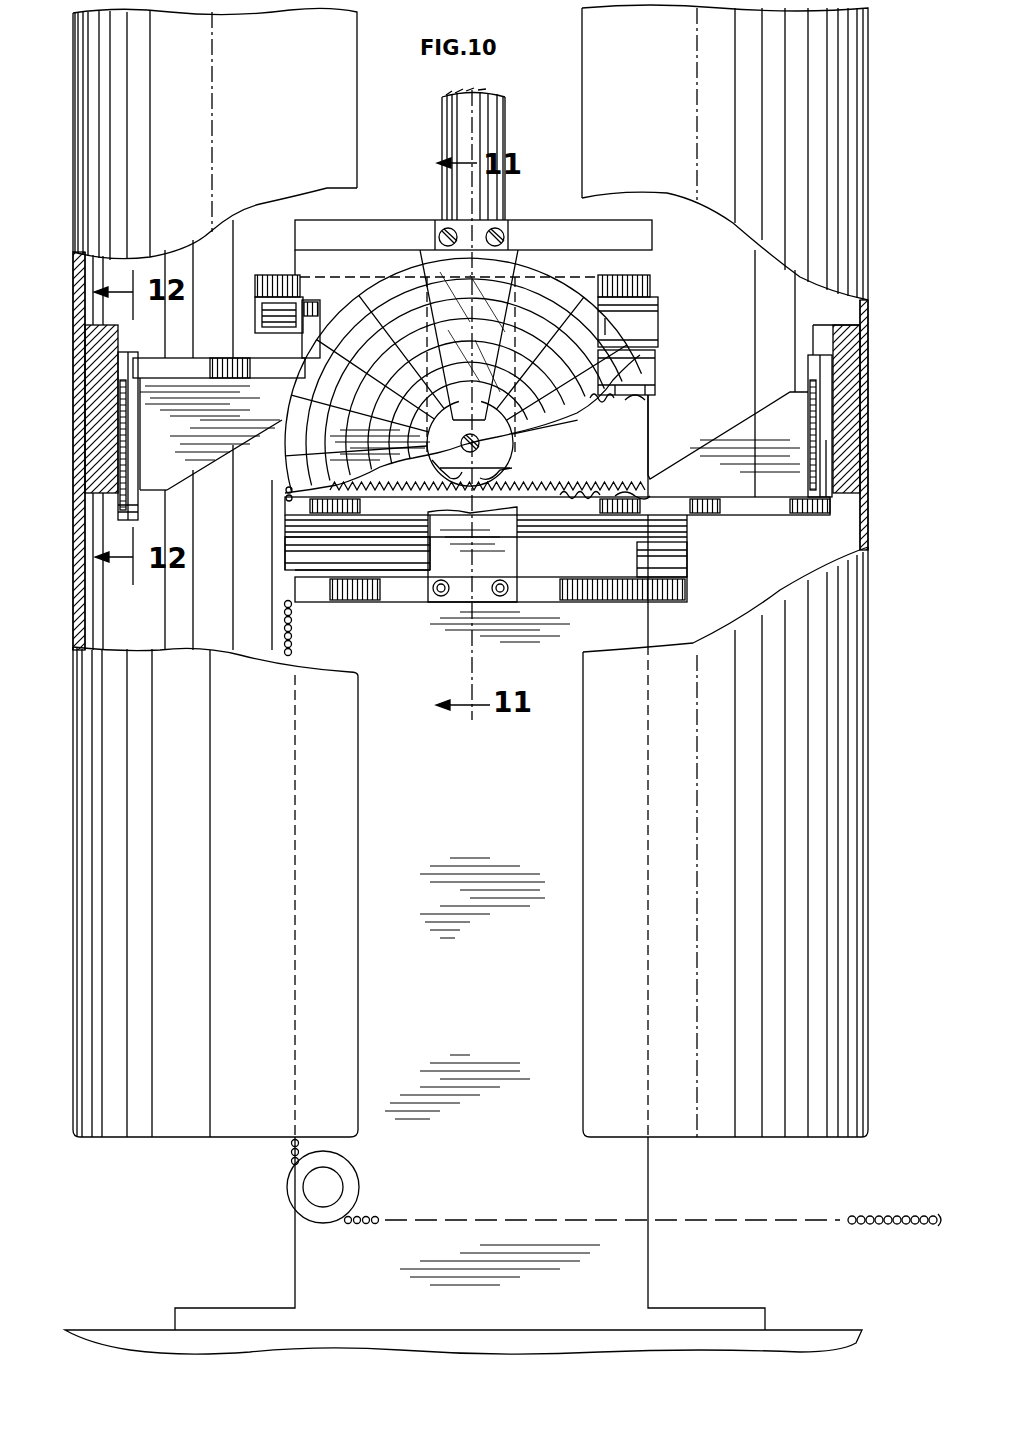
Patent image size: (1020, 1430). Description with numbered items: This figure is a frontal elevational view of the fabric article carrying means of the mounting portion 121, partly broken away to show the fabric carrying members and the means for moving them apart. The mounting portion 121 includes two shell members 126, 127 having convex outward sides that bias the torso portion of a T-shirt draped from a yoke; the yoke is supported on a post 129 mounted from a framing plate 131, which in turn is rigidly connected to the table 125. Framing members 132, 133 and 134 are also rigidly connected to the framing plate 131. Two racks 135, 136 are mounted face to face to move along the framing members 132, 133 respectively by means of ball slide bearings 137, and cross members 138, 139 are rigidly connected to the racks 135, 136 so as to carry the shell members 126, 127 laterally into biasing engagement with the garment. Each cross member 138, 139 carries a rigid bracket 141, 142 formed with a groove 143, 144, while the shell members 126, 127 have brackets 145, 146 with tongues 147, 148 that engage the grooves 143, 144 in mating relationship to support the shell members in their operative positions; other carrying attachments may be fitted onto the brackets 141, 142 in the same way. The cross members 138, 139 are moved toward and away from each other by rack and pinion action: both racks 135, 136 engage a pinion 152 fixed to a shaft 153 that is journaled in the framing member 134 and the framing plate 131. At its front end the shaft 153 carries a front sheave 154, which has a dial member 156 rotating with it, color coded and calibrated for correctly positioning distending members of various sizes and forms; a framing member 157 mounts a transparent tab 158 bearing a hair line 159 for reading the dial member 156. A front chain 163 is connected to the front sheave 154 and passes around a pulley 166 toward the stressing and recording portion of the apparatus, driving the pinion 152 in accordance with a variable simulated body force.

The mounting portion 121 is at (877, 189).
The table 125 is at (805, 1338).
The shell member 126 is at (85, 857).
The shell member 127 is at (852, 862).
The post 129 is at (443, 128).
The framing plate 131 is at (322, 1252).
The framing member 132 is at (650, 285).
The framing member 133 is at (688, 590).
The framing member 134 is at (485, 590).
The rack 135 is at (606, 402).
The rack 136 is at (592, 490).
The ball slide bearing 137 is at (262, 315).
The cross member 138 is at (218, 356).
The cross member 139 is at (775, 516).
The rigid bracket 141 is at (213, 448).
The rigid bracket 142 is at (725, 440).
The groove 143 is at (133, 400).
The groove 144 is at (813, 378).
The bracket 145 is at (117, 454).
The bracket 146 is at (847, 381).
The tongue 147 is at (132, 511).
The tongue 148 is at (822, 457).
The pinion 152 is at (465, 480).
The shaft 153 is at (495, 446).
The front sheave 154 is at (570, 298).
The dial member 156 is at (650, 349).
The framing member 157 is at (323, 220).
The transparent tab 158 is at (442, 282).
The hair line 159 is at (492, 280).
The front chain 163 is at (296, 634).
The pulley 166 is at (318, 1186).